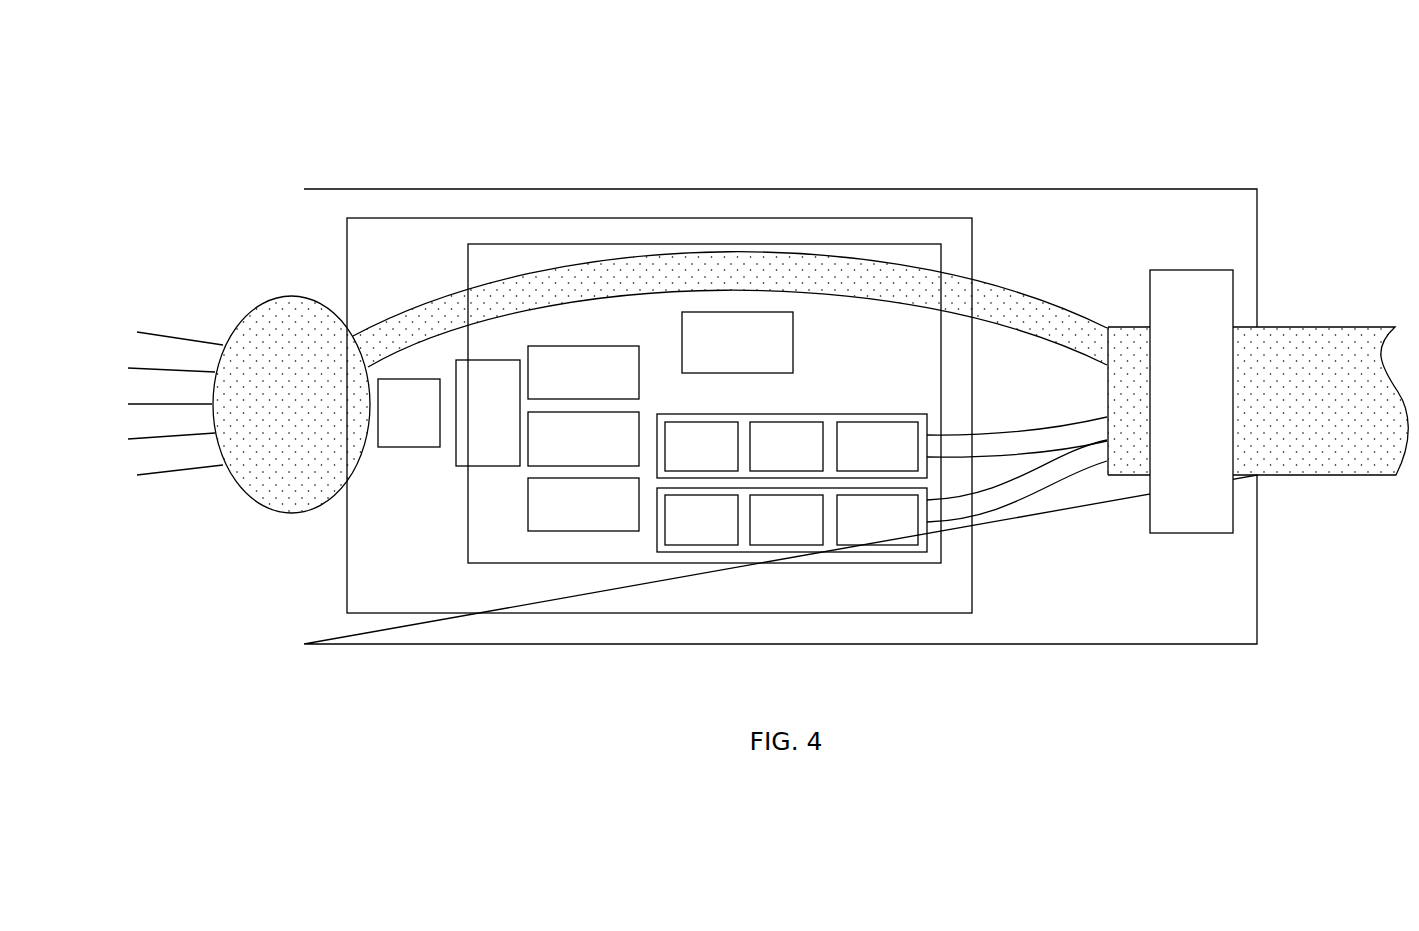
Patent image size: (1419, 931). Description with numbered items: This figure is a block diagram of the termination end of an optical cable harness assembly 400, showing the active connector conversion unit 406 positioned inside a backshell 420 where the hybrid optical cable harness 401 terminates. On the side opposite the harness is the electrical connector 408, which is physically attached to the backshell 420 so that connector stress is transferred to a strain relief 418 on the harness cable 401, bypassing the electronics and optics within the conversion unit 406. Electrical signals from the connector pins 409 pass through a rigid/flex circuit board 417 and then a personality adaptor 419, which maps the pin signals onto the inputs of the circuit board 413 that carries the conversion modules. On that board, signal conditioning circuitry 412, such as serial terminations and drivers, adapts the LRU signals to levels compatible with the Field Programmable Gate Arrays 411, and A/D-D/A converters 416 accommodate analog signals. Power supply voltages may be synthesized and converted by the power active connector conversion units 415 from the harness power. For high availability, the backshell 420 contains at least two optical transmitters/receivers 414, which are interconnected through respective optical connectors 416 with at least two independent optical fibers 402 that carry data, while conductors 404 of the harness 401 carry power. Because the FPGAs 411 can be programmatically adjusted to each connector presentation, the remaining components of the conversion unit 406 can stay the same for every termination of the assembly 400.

The optical cable harness assembly 400 is at (1188, 55).
The optical cable harness 401 is at (1318, 327).
The optical fibers 402 is at (1013, 435).
The conductors 404 is at (1005, 293).
The active connector conversion unit 406 is at (722, 216).
The electrical connector 408 is at (240, 300).
The connector pins 409 is at (122, 455).
The Field Programmable Gate Arrays 411 is at (720, 463).
The signal conditioning circuitry 412 is at (563, 386).
The circuit board 413 is at (728, 563).
The optical transmitters/receivers 414 is at (768, 463).
The power active connector conversion units 415 is at (717, 355).
The A/D-D/A converters 416 is at (858, 463).
The rigid/flex circuit board 417 is at (390, 425).
The strain relief 418 is at (1212, 406).
The personality adaptor 419 is at (468, 422).
The backshell 420 is at (1072, 217).